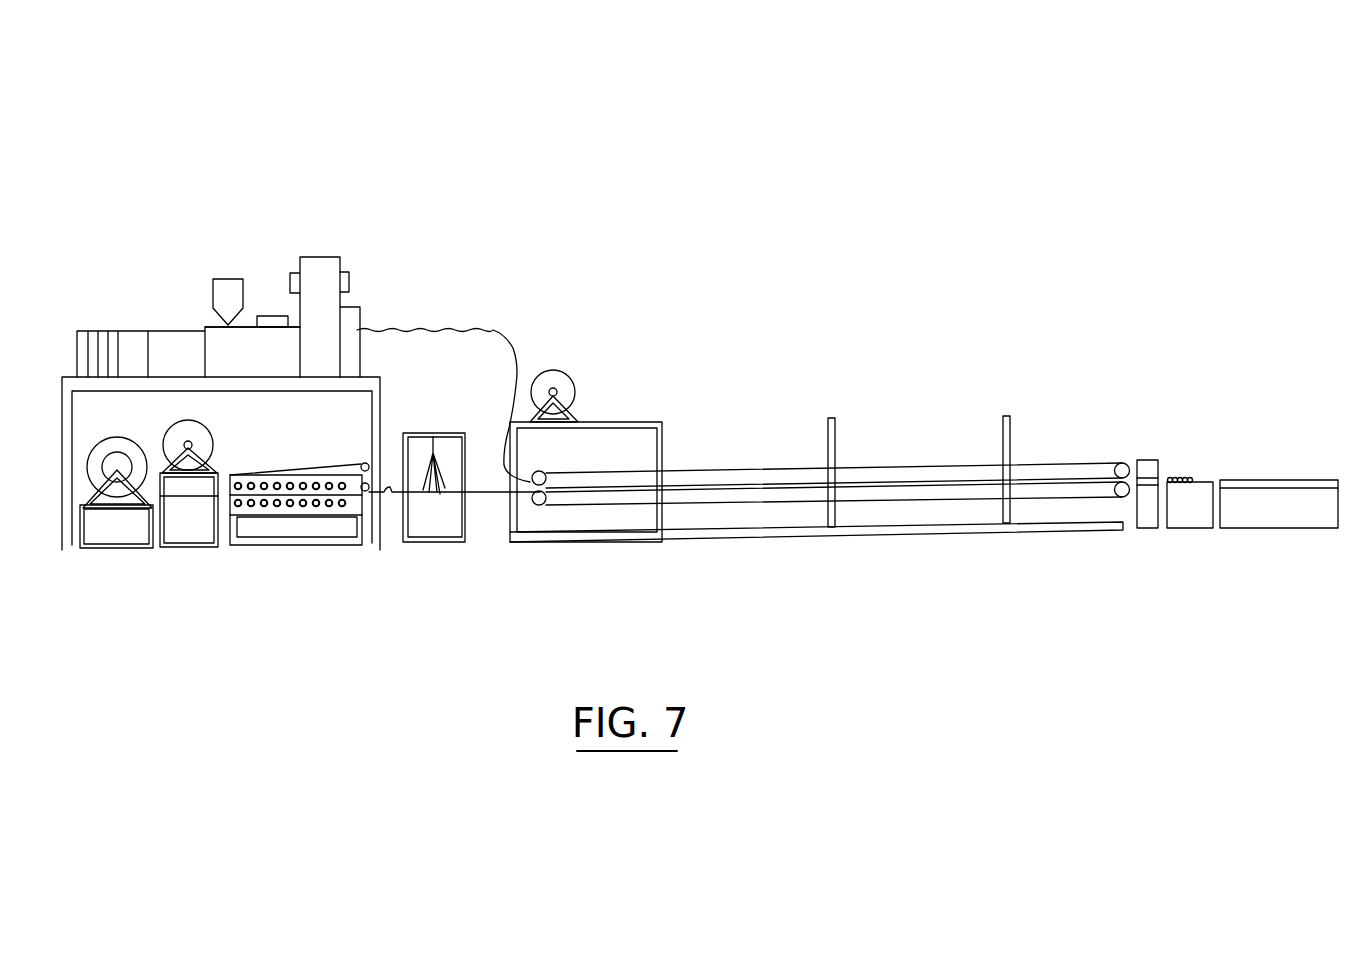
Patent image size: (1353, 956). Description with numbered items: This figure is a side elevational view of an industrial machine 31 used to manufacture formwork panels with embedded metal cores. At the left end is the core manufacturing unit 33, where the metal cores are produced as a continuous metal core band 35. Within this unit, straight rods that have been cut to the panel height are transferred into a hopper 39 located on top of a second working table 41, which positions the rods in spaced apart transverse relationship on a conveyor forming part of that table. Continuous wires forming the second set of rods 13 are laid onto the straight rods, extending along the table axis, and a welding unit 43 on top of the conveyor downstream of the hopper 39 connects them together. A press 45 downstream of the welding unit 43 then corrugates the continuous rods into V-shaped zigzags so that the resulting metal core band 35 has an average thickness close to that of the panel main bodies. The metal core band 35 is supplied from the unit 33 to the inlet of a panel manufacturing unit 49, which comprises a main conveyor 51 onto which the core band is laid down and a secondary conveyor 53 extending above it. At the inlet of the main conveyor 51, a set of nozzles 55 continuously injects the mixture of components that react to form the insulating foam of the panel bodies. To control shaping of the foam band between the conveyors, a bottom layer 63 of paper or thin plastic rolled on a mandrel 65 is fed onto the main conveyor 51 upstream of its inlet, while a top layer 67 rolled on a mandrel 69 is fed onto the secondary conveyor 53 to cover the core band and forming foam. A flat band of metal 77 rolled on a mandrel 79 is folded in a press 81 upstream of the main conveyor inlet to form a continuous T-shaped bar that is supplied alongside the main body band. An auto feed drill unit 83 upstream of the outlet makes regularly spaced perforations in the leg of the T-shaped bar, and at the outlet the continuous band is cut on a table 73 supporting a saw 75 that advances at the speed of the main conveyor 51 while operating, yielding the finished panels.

The industrial machine 31 is at (920, 186).
The second set of rods 13 is at (160, 329).
The second working table 41 is at (188, 327).
The hopper 39 is at (228, 278).
The welding unit 43 is at (262, 316).
The core manufacturing unit 33 is at (313, 255).
The press 45 is at (343, 257).
The continuous metal core band 35 is at (503, 332).
The mandrel 69 is at (565, 380).
The top layer 67 is at (533, 450).
The set of nozzles 55 is at (445, 437).
The bottom layer 63 is at (385, 501).
The press 81 is at (300, 507).
The mandrel 65 is at (188, 445).
The mandrel 79 is at (117, 470).
The flat band of metal 77 is at (195, 497).
The secondary conveyor 53 is at (740, 483).
The main conveyor 51 is at (765, 487).
The panel manufacturing unit 49 is at (868, 459).
The auto feed drill unit 83 is at (1180, 478).
The saw 75 is at (1233, 477).
The table 73 is at (1273, 480).